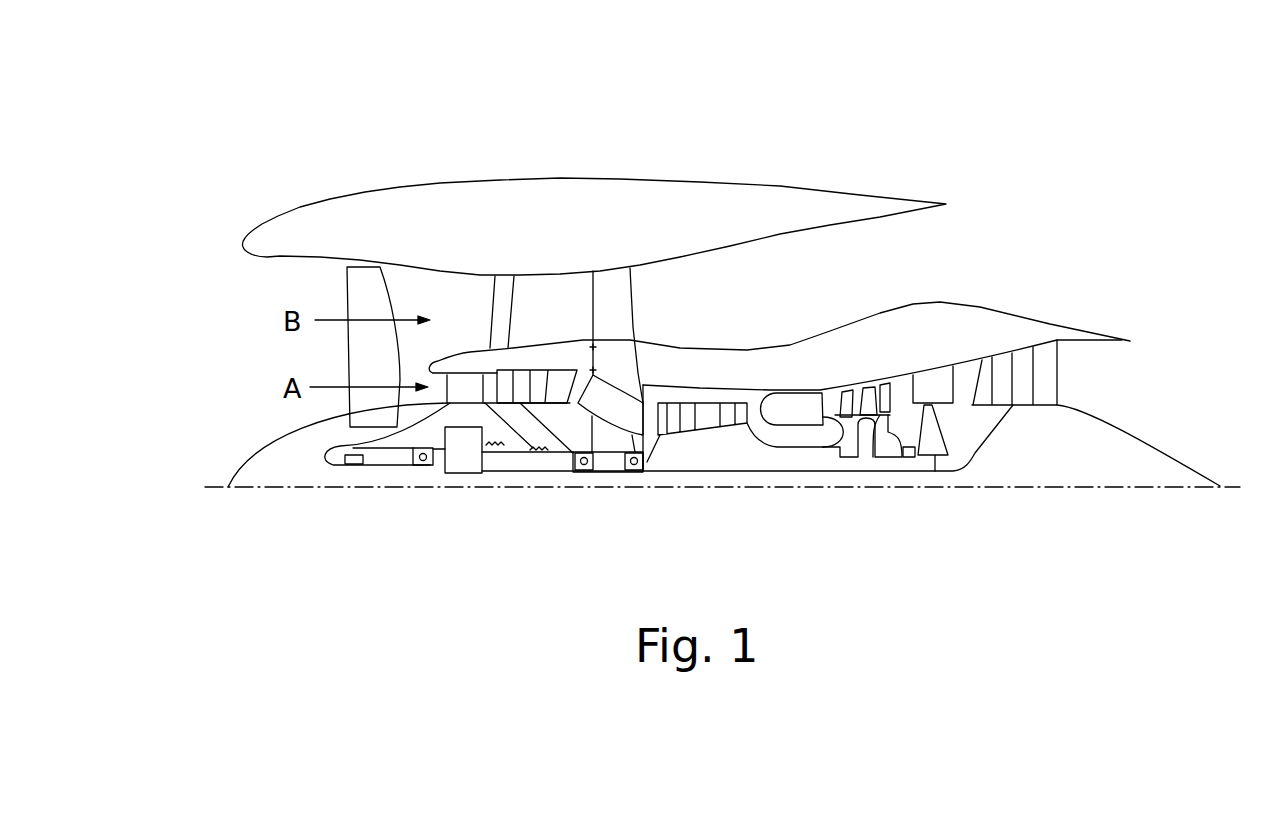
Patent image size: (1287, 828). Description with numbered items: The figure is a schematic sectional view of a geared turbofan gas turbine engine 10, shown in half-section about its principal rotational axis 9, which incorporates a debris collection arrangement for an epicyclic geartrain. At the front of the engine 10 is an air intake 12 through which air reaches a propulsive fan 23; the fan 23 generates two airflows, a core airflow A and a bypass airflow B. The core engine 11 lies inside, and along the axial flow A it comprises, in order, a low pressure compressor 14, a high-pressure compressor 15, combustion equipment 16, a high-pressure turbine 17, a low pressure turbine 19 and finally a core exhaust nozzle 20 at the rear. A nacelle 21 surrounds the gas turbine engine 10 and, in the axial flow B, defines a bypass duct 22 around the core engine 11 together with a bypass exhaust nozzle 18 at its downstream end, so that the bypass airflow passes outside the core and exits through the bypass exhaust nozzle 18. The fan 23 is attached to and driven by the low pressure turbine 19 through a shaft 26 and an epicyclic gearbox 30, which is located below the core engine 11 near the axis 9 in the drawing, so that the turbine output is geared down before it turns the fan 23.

The principal rotational axis 9 is at (1090, 487).
The gas turbine engine 10 is at (317, 203).
The core engine 11 is at (812, 365).
The air intake 12 is at (262, 287).
The low pressure compressor 14 is at (540, 383).
The high-pressure compressor 15 is at (712, 413).
The combustion equipment 16 is at (792, 417).
The high-pressure turbine 17 is at (868, 397).
The bypass exhaust nozzle 18 is at (1077, 202).
The low pressure turbine 19 is at (1027, 392).
The core exhaust nozzle 20 is at (1142, 387).
The nacelle 21 is at (612, 198).
The bypass duct 22 is at (907, 254).
The propulsive fan 23 is at (353, 367).
The shaft 26 is at (667, 473).
The epicyclic gearbox 30 is at (462, 462).